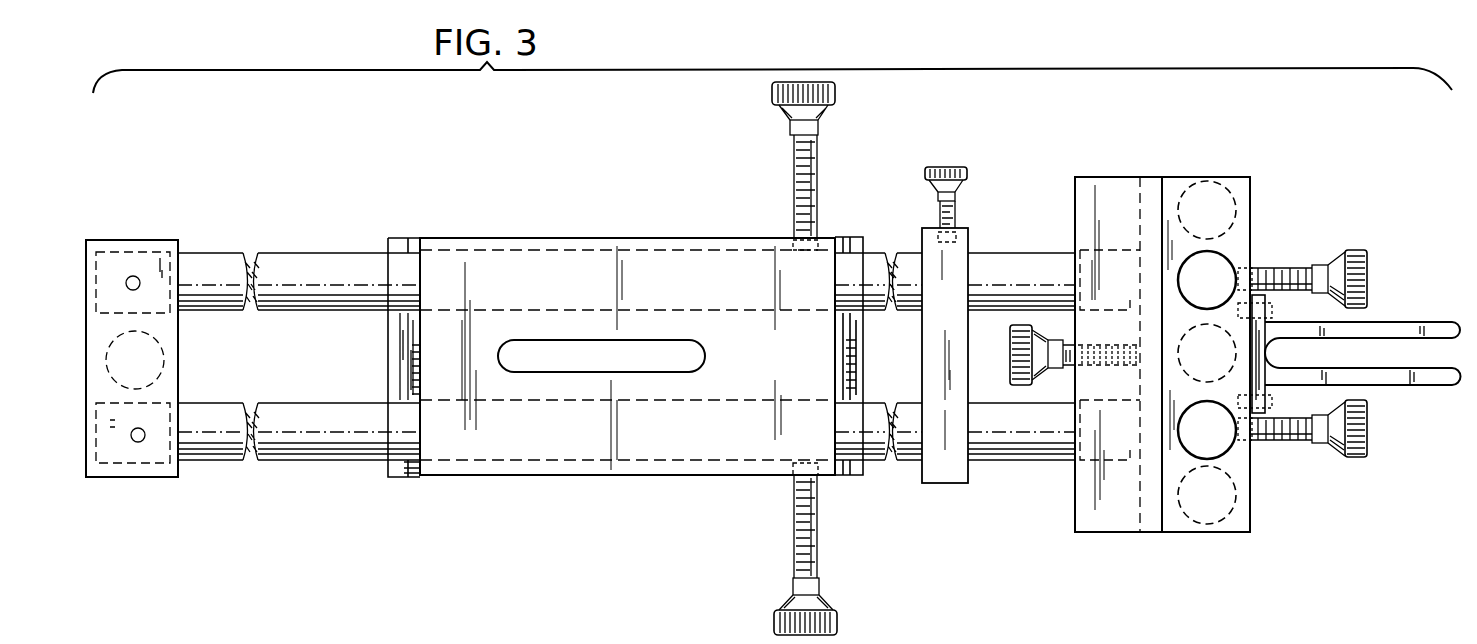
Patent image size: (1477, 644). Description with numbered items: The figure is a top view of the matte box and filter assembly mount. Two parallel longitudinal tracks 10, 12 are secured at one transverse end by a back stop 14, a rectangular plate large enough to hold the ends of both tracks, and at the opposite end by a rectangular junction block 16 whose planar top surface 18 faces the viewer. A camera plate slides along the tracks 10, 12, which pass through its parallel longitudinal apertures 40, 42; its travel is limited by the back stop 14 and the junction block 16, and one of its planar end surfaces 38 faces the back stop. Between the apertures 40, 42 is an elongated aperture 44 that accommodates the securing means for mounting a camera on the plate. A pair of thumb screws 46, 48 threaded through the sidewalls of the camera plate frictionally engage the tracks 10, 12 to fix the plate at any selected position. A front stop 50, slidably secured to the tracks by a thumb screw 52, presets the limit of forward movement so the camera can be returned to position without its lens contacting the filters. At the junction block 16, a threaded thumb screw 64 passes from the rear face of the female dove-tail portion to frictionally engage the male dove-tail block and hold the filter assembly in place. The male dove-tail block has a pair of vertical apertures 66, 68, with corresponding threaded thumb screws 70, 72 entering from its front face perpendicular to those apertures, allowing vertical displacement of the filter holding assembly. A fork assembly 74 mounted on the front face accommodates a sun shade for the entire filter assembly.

The track 10 is at (226, 258).
The track 12 is at (228, 462).
The back stop 14 is at (150, 238).
The junction block 16 is at (1170, 190).
The planar top surface 18 is at (1123, 533).
The planar end surface 38 is at (400, 350).
The longitudinal aperture 40 is at (457, 250).
The longitudinal aperture 42 is at (445, 460).
The elongated aperture 44 is at (565, 343).
The thumb screw 46 is at (819, 128).
The thumb screw 48 is at (820, 587).
The front stop 50 is at (950, 480).
The thumb screw 52 is at (955, 167).
The threaded thumb screw 64 is at (1010, 355).
The vertical aperture 66 is at (1215, 268).
The vertical aperture 68 is at (1220, 440).
The threaded thumb screw 70 is at (1366, 256).
The threaded thumb screw 72 is at (1367, 440).
The fork assembly 74 is at (1380, 325).